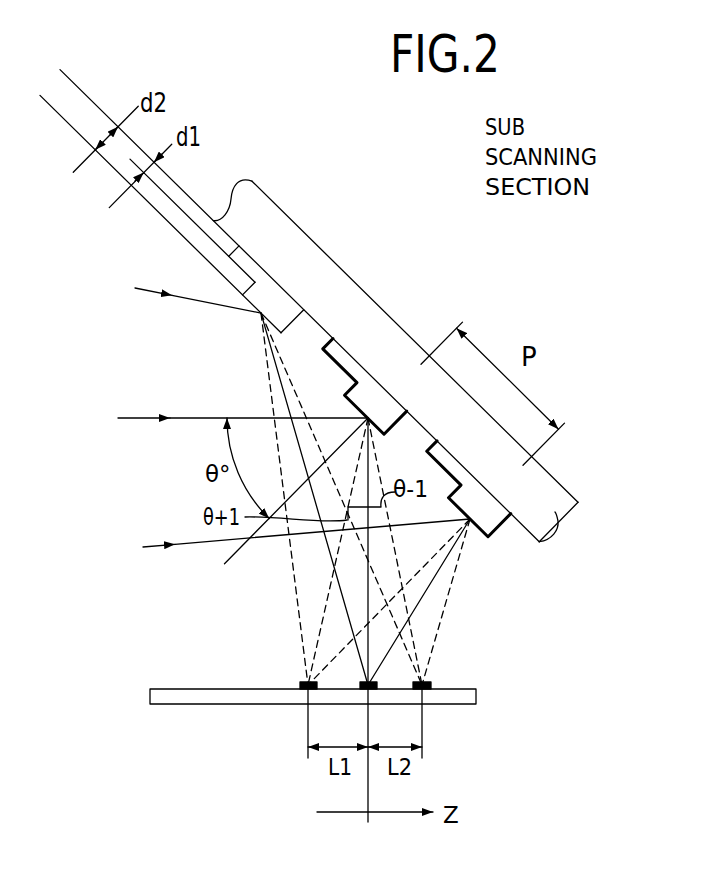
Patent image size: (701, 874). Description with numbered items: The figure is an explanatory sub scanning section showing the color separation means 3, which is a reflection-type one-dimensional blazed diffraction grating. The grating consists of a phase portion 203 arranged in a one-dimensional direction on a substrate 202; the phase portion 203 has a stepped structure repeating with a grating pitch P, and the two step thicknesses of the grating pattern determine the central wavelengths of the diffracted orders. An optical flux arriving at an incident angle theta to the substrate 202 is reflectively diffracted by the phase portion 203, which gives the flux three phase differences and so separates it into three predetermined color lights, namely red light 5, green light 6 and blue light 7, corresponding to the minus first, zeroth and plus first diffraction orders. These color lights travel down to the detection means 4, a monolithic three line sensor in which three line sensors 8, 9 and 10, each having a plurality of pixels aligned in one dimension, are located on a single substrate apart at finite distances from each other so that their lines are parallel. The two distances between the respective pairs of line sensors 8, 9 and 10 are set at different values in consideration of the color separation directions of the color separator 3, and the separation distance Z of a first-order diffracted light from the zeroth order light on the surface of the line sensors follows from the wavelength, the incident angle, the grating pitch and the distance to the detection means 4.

The color separation means 3 is at (345, 339).
The substrate 202 is at (555, 512).
The phase portion 203 is at (497, 520).
The detection means 4 is at (477, 693).
The red light 5 is at (320, 632).
The green light 6 is at (367, 603).
The blue light 7 is at (410, 632).
The line sensor 8 is at (297, 690).
The line sensor 9 is at (380, 693).
The line sensor 10 is at (427, 692).